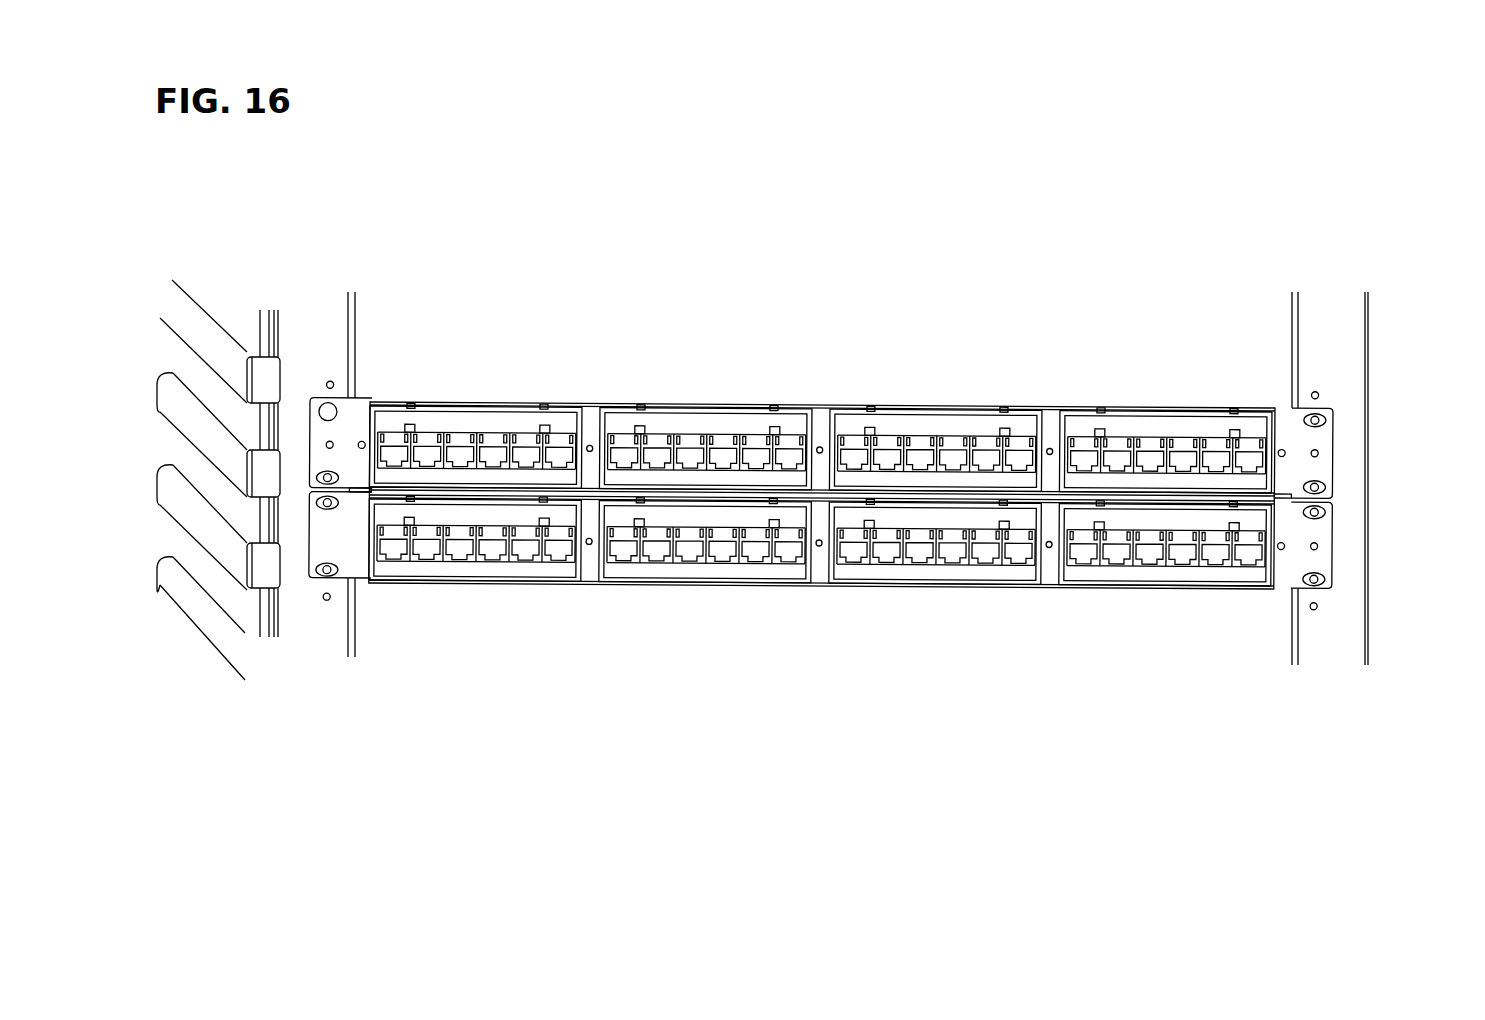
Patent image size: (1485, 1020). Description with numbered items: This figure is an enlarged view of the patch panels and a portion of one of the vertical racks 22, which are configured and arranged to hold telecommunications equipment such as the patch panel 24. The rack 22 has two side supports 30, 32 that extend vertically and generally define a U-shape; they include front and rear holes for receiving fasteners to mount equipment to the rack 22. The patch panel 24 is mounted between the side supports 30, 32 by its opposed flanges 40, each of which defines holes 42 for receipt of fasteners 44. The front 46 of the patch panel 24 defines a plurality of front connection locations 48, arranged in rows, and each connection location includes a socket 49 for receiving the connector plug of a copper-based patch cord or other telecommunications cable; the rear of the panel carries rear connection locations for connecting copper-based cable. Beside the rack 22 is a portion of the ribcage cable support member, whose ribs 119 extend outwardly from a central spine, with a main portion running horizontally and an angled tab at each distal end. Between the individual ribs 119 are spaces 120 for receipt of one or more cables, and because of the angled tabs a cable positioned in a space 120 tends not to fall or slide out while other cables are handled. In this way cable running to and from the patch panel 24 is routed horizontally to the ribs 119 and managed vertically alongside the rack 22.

The vertical rack 22 is at (263, 328).
The patch panel 24 is at (820, 403).
The side support 30 is at (355, 327).
The side support 32 is at (1293, 330).
The flange 40 is at (310, 535).
The hole 42 is at (340, 409).
The fastener 44 is at (331, 420).
The front 46 is at (690, 438).
The front connection location 48 is at (557, 443).
The socket 49 is at (788, 457).
The rib 119 is at (188, 390).
The space 120 is at (190, 463).